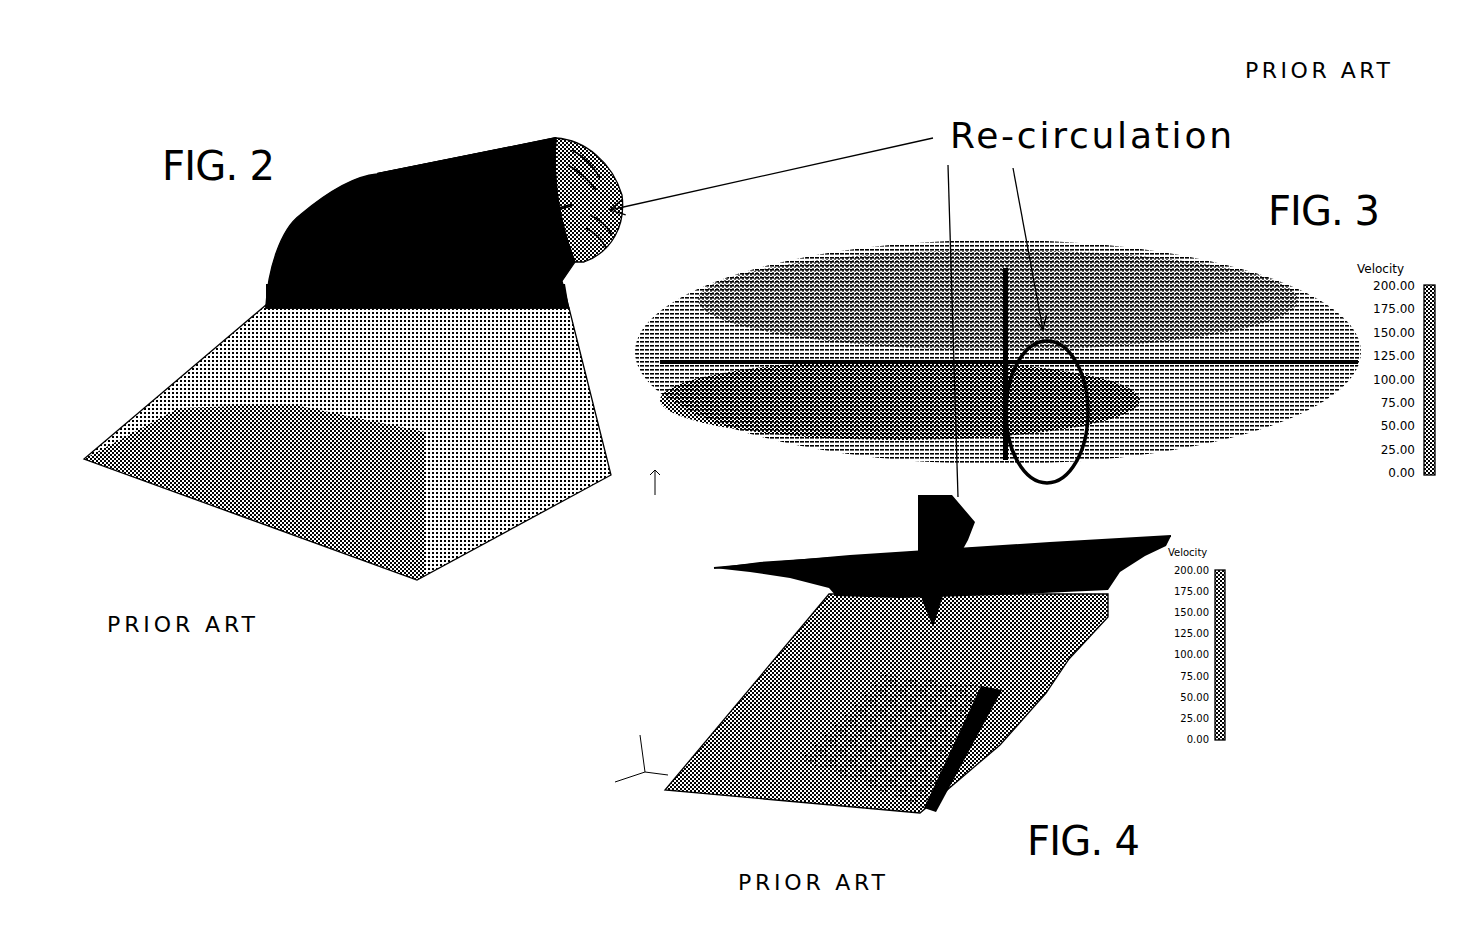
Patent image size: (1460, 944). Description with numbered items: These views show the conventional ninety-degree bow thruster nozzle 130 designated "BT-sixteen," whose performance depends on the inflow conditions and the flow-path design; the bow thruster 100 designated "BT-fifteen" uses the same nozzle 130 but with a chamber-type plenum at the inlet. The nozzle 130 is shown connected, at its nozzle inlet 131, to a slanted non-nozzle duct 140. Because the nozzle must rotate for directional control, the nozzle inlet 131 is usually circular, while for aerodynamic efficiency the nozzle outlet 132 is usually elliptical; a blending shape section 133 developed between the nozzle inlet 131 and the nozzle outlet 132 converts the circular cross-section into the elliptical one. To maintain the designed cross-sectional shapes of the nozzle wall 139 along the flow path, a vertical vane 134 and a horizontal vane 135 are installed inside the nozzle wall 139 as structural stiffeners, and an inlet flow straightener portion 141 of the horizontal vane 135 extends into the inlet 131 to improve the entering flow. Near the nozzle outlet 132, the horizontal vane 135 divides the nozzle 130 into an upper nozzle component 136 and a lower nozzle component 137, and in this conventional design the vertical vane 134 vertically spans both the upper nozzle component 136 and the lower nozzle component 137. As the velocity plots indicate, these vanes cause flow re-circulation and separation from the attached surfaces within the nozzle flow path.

In FIG. 2, the bow thruster 100 is at (207, 283).
In FIG. 2, the bow thruster nozzle 130 is at (458, 157).
In FIG. 2, the nozzle inlet 131 is at (334, 320).
In FIG. 4, the nozzle inlet 131 is at (855, 632).
In FIG. 2, the nozzle outlet 132 is at (560, 185).
In FIG. 3, the nozzle outlet 132 is at (823, 297).
In FIG. 2, the blending shape section 133 is at (454, 127).
In FIG. 2, the vertical vane 134 is at (578, 192).
In FIG. 3, the vertical vane 134 is at (993, 263).
In FIG. 4, the vertical vane 134 is at (918, 521).
In FIG. 2, the horizontal vane 135 is at (573, 208).
In FIG. 3, the horizontal vane 135 is at (1200, 357).
In FIG. 4, the horizontal vane 135 is at (829, 589).
In FIG. 3, the upper nozzle component 136 is at (787, 410).
In FIG. 3, the lower nozzle component 137 is at (900, 400).
In FIG. 2, the nozzle wall 139 is at (424, 192).
In FIG. 2, the slanted non-nozzle duct 140 is at (258, 384).
In FIG. 4, the slanted non-nozzle duct 140 is at (796, 697).
In FIG. 4, the inlet flow straightener portion 141 is at (942, 552).